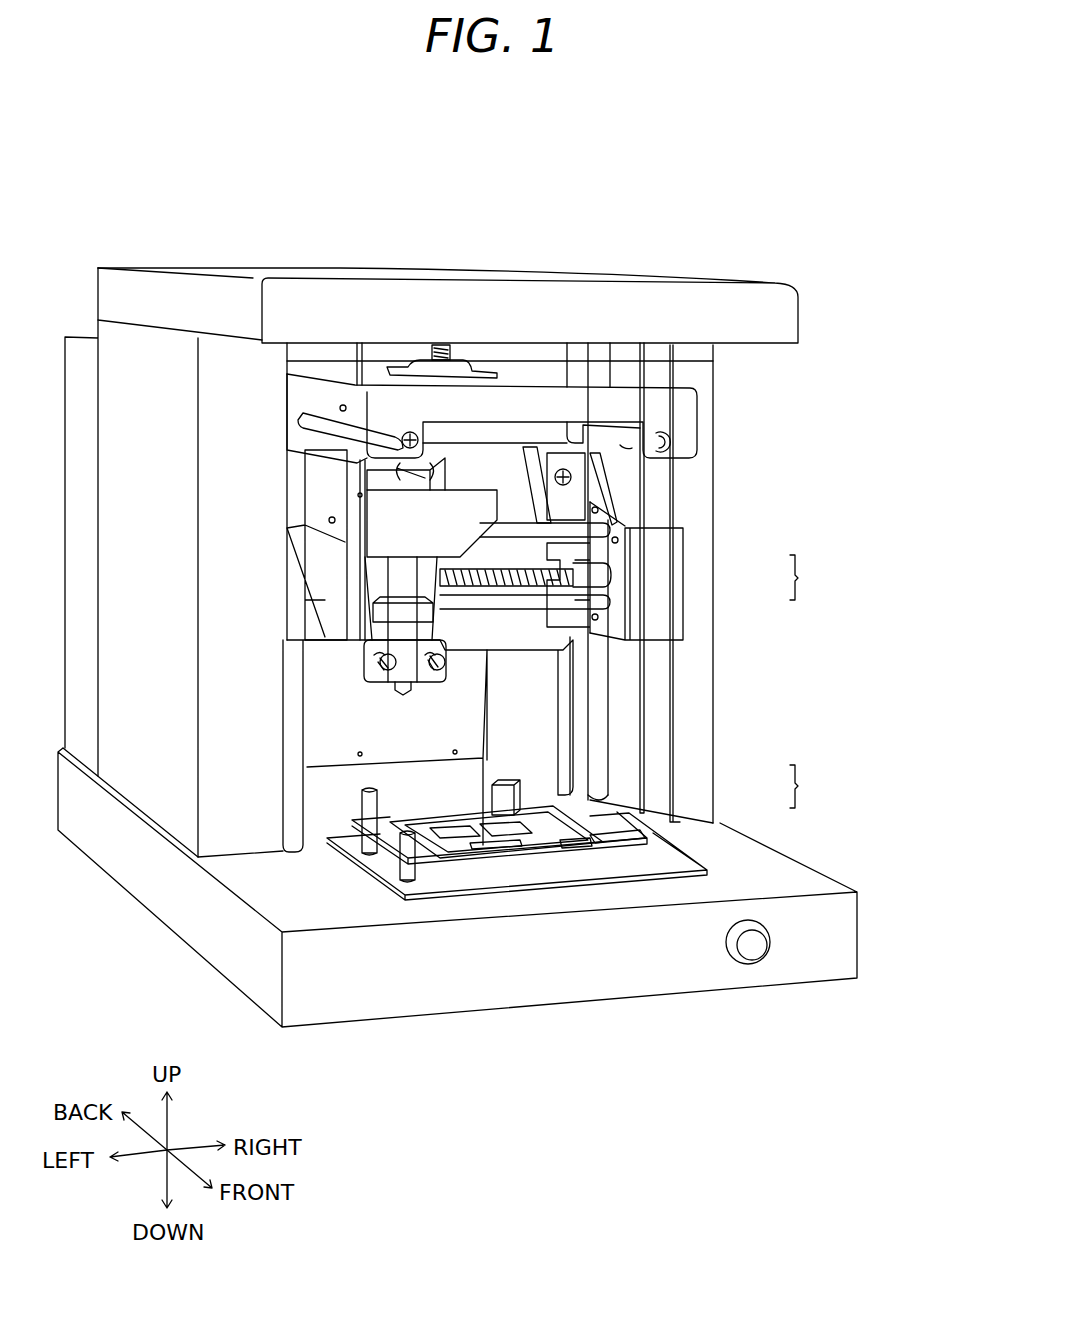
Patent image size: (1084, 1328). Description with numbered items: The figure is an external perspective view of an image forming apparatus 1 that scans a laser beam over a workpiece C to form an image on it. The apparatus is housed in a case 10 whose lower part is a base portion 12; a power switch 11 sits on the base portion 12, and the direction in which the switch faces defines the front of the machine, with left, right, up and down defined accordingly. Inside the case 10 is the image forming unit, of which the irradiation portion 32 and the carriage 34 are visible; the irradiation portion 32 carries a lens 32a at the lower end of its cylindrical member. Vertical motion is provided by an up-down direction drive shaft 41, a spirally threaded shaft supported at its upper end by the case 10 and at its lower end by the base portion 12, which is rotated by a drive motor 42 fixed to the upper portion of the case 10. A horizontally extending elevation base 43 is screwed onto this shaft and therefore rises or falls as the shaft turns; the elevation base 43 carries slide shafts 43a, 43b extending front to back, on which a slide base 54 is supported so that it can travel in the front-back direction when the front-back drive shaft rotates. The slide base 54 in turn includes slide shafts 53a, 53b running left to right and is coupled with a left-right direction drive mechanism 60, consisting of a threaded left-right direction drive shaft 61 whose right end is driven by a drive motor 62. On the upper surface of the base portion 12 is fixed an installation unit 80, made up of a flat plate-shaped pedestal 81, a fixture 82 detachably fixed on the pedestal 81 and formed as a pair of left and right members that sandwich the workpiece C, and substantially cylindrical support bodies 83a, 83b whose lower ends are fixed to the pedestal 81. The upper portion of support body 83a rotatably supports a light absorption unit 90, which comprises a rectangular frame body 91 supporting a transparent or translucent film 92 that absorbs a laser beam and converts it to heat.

The image forming apparatus 1 is at (790, 226).
The case 10 is at (286, 268).
The power switch 11 is at (752, 948).
The base portion 12 is at (835, 925).
The irradiation portion 32 is at (370, 658).
The lens 32a is at (403, 692).
The carriage 34 is at (353, 578).
The up-down direction drive shaft 41 is at (436, 350).
The drive motor 42 is at (531, 357).
The elevation base 43 is at (688, 404).
The slide shaft 43a is at (620, 440).
The slide shaft 43b is at (310, 420).
The slide shaft 53a is at (583, 513).
The slide shaft 53b is at (567, 603).
The slide base 54 is at (513, 433).
The left-right direction drive mechanism 60 is at (690, 571).
The left-right direction drive shaft 61 is at (567, 575).
The drive motor 62 is at (667, 550).
The installation unit 80 is at (517, 955).
The pedestal 81 is at (455, 883).
The fixture 82 is at (505, 870).
The support body 83a is at (360, 856).
The support body 83b is at (415, 882).
The light absorption unit 90 is at (696, 805).
The frame body 91 is at (585, 830).
The film 92 is at (600, 825).
The workpiece C is at (533, 855).